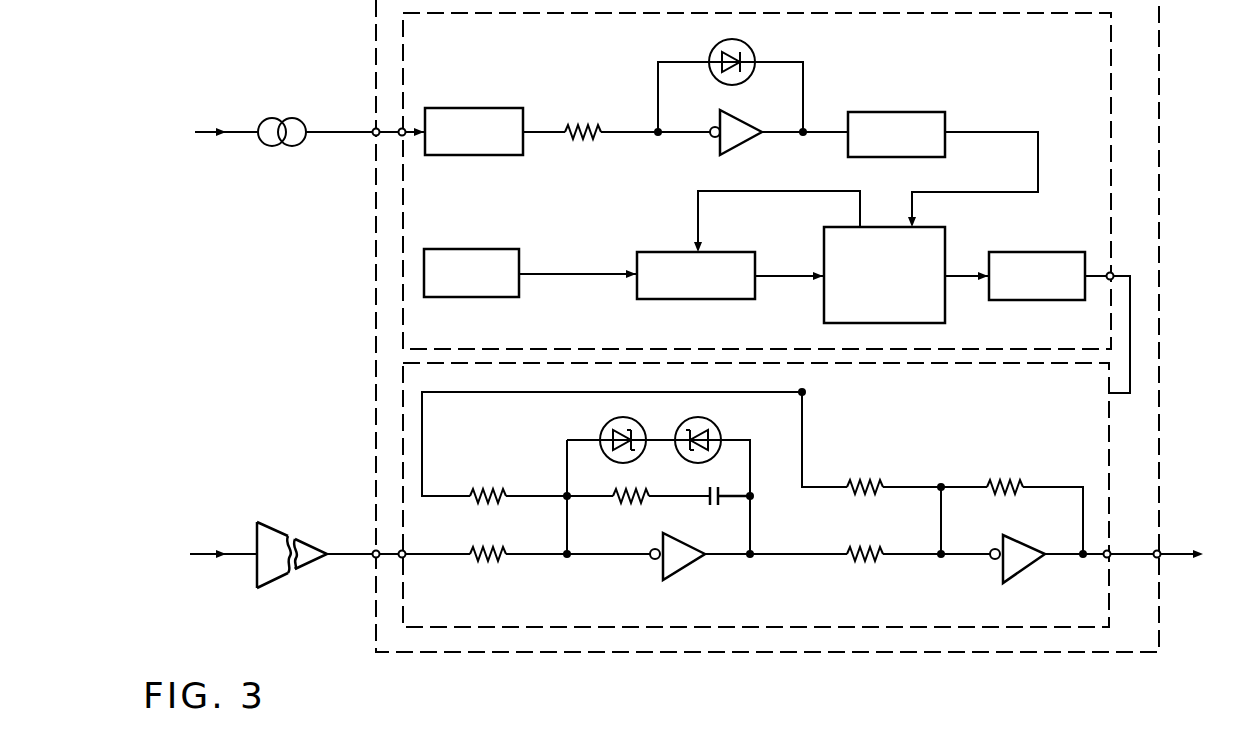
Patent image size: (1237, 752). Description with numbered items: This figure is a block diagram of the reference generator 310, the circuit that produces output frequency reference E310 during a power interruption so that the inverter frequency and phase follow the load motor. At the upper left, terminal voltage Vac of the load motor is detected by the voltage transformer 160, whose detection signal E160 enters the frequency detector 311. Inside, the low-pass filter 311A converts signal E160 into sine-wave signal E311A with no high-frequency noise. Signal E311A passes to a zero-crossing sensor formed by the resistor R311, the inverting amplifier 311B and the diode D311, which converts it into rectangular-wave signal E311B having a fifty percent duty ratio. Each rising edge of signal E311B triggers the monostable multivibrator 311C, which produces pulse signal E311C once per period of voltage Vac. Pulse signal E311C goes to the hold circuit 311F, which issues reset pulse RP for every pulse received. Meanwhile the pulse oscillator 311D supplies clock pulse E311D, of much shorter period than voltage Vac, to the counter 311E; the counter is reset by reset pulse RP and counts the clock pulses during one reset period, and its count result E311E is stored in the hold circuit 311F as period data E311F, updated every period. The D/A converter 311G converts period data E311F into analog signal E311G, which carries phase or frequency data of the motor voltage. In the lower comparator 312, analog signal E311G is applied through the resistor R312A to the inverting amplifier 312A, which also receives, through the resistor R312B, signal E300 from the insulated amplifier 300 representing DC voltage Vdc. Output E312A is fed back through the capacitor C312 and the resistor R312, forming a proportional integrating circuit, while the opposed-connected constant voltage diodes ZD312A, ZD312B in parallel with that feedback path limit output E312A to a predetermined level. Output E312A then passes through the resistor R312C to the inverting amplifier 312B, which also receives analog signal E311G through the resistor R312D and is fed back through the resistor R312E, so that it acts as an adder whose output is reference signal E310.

The voltage transformer 160 is at (280, 117).
The detection signal E160 is at (328, 135).
The insulated amplifier 300 is at (311, 547).
The DC voltage detection signal E300 is at (347, 558).
The reference generator 310 is at (626, 652).
The frequency detector 311 is at (1112, 122).
The low-pass filter 311A is at (474, 108).
The sine-wave signal E311A is at (544, 134).
The resistor R311 is at (576, 127).
The diode D311 is at (734, 81).
The inverting amplifier 311B is at (745, 125).
The rectangular-wave signal E311B is at (798, 136).
The monostable multivibrator 311C is at (893, 112).
The pulse signal E311C is at (1002, 130).
The reset pulse RP is at (771, 210).
The pulse oscillator 311D is at (469, 249).
The clock pulse E311D is at (563, 273).
The counter 311E is at (724, 252).
The count result E311E is at (780, 279).
The hold circuit 311F is at (934, 227).
The period data E311F is at (960, 279).
The D/A converter 311G is at (1034, 252).
The analog signal E311G is at (1131, 340).
The comparator 312 is at (1111, 448).
The resistor R312A is at (488, 488).
The resistor R312B is at (488, 548).
The resistor R312 is at (617, 500).
The constant voltage diode ZD312A is at (578, 432).
The constant voltage diode ZD312B is at (720, 480).
The capacitor C312 is at (719, 490).
The inverting amplifier 312A is at (685, 545).
The output E312A is at (750, 557).
The resistor R312C is at (867, 548).
The resistor R312D is at (867, 483).
The resistor R312E is at (1006, 483).
The inverting amplifier 312B is at (1029, 546).
The reference signal E310 is at (1133, 543).
The terminal voltage Vac is at (224, 118).
The DC voltage Vdc is at (223, 541).